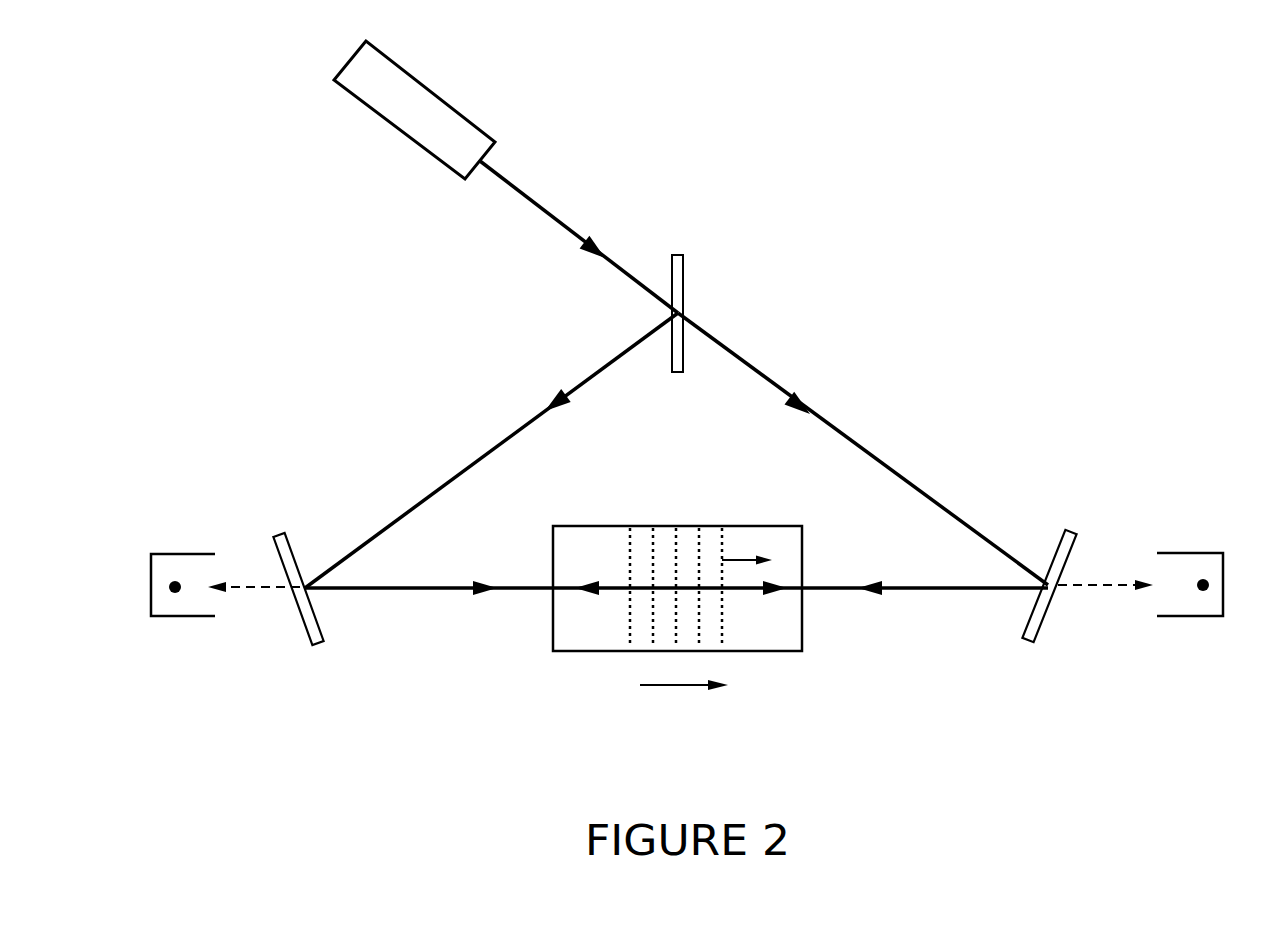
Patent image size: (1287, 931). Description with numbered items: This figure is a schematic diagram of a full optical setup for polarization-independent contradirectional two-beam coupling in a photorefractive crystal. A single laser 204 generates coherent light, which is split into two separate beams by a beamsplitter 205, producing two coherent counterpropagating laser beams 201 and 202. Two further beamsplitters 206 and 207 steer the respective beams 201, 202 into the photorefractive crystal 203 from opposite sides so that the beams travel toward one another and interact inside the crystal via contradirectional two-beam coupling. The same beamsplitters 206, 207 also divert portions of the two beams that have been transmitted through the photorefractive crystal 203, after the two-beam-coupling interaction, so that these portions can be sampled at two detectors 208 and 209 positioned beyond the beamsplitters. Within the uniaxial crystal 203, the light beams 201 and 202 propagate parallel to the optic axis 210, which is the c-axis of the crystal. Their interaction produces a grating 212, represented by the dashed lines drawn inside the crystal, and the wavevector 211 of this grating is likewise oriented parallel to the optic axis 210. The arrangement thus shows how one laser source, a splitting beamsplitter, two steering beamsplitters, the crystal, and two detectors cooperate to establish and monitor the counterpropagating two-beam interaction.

The counterpropagating laser beam 201 is at (422, 588).
The counterpropagating laser beam 202 is at (905, 590).
The photorefractive crystal 203 is at (572, 526).
The laser 204 is at (440, 98).
The beamsplitter 205 is at (685, 263).
The beamsplitter 206 is at (287, 528).
The beamsplitter 207 is at (1065, 537).
The detector 208 is at (167, 554).
The detector 209 is at (1207, 552).
The optic axis 210 is at (670, 685).
The wavevector 211 is at (740, 560).
The grating 212 is at (722, 530).